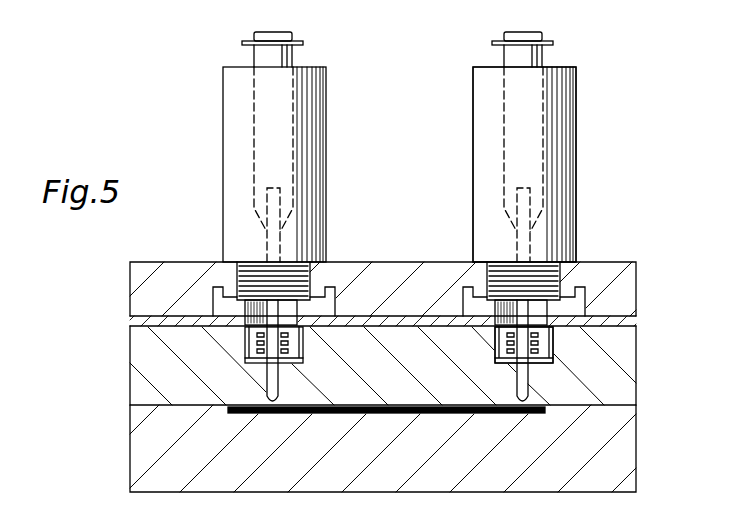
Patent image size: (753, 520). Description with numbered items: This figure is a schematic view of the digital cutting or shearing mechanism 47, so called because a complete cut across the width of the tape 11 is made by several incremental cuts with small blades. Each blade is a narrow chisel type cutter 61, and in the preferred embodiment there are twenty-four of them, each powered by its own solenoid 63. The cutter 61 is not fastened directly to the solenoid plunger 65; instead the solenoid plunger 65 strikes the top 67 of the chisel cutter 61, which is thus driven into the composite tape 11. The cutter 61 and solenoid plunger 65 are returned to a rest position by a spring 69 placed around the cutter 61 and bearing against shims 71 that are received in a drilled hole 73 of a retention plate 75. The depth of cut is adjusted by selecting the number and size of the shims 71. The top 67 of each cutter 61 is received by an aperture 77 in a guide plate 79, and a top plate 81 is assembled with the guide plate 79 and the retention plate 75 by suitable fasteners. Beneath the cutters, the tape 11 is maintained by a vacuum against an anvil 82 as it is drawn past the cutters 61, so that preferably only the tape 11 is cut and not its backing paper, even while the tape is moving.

The tape 11 is at (370, 415).
The digital cutting or shearing mechanism 47 is at (596, 211).
The chisel type cutter 61 is at (279, 377).
The solenoid 63 is at (326, 124).
The solenoid plunger 65 is at (281, 242).
The top of the chisel cutter 67 is at (297, 311).
The spring 69 is at (534, 334).
The shims 71 is at (303, 356).
The drilled hole 73 is at (247, 353).
The retention plate 75 is at (130, 378).
The aperture 77 is at (243, 317).
The guide plate 79 is at (130, 323).
The top plate 81 is at (130, 283).
The anvil 82 is at (130, 443).